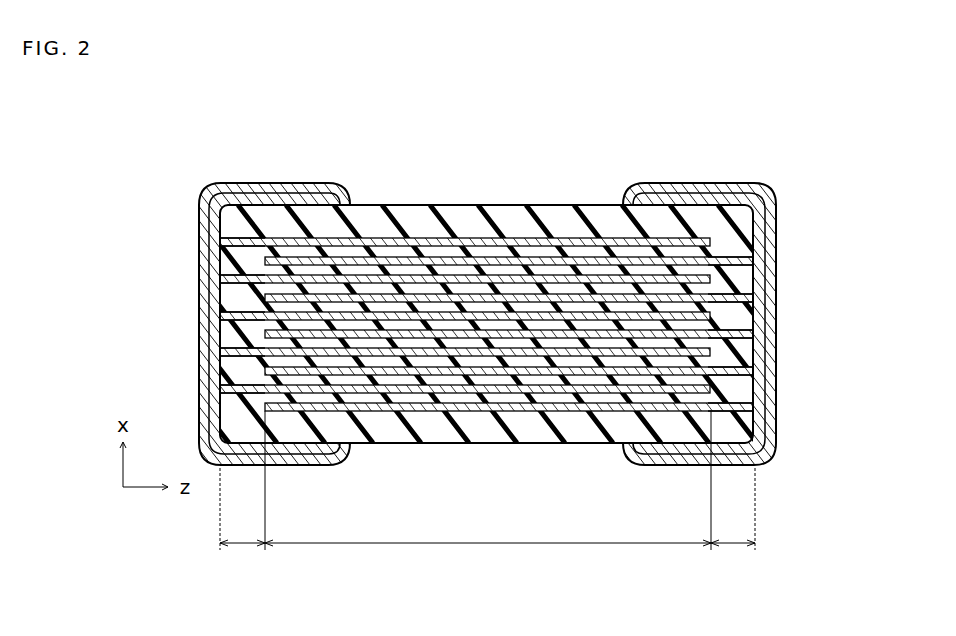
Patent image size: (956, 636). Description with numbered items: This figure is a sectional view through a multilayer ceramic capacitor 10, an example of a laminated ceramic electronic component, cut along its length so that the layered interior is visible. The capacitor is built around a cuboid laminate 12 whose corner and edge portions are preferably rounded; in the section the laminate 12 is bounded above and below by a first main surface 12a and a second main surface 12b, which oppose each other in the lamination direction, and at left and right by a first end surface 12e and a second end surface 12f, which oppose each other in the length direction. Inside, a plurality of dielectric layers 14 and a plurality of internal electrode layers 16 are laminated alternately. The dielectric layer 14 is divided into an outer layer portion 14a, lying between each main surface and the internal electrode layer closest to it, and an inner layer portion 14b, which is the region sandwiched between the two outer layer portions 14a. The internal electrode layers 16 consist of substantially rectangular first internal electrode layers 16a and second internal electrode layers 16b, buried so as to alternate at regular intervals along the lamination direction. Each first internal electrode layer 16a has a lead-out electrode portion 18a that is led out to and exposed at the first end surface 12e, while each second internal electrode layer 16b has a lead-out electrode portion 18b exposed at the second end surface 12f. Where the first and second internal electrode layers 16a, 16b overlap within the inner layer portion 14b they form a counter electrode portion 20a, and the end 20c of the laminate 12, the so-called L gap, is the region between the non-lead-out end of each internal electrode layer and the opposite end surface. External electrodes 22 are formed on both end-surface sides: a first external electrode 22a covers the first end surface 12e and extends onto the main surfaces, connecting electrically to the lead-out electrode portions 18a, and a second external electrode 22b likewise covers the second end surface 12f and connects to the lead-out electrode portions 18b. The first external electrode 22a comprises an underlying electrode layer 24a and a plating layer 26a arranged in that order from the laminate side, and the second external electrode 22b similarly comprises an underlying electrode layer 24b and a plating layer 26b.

The multilayer ceramic capacitor 10 is at (355, 110).
The laminate 12 is at (492, 206).
The first main surface 12a is at (411, 205).
The second main surface 12b is at (412, 444).
The first end surface 12e is at (221, 303).
The second end surface 12f is at (754, 233).
The dielectric layer 14 is at (522, 131).
The outer layer portion 14a is at (575, 283).
The inner layer portion 14b is at (588, 290).
The internal electrode layer 16 is at (709, 560).
The first internal electrode layer 16a is at (388, 315).
The second internal electrode layer 16b is at (490, 334).
The lead-out electrode portion 18a is at (221, 279).
The lead-out electrode portion 18b is at (754, 334).
The counter electrode portion 20a is at (488, 528).
The end of the laminate 20c is at (487, 480).
The external electrodes 22 is at (818, 560).
The first external electrode 22a is at (325, 131).
The second external electrode 22b is at (662, 131).
The underlying electrode layer 24a is at (288, 200).
The underlying electrode layer 24b is at (684, 200).
The plating layer 26a is at (253, 190).
The plating layer 26b is at (728, 190).